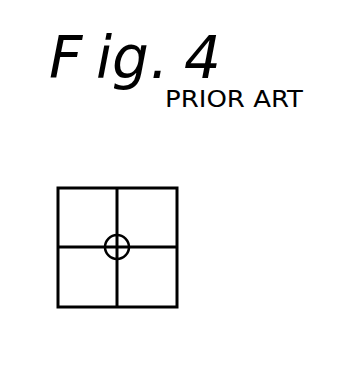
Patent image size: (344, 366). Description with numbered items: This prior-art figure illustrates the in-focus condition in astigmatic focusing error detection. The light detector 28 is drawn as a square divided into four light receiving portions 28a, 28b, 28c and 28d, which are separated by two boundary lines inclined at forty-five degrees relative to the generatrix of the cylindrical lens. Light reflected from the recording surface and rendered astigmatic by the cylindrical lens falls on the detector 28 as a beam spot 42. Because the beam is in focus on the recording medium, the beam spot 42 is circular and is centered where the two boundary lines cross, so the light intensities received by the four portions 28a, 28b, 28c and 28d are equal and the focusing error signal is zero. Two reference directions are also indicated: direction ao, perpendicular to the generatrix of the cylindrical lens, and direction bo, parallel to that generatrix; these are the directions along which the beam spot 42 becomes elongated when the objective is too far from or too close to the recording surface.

The light detector 28 is at (178, 283).
The light receiving portion 28a is at (78, 196).
The light receiving portion 28b is at (142, 205).
The light receiving portion 28c is at (145, 295).
The light receiving portion 28d is at (85, 293).
The beam spot 42 is at (129, 243).
The direction a0 ao is at (215, 198).
The direction b0 bo is at (215, 298).